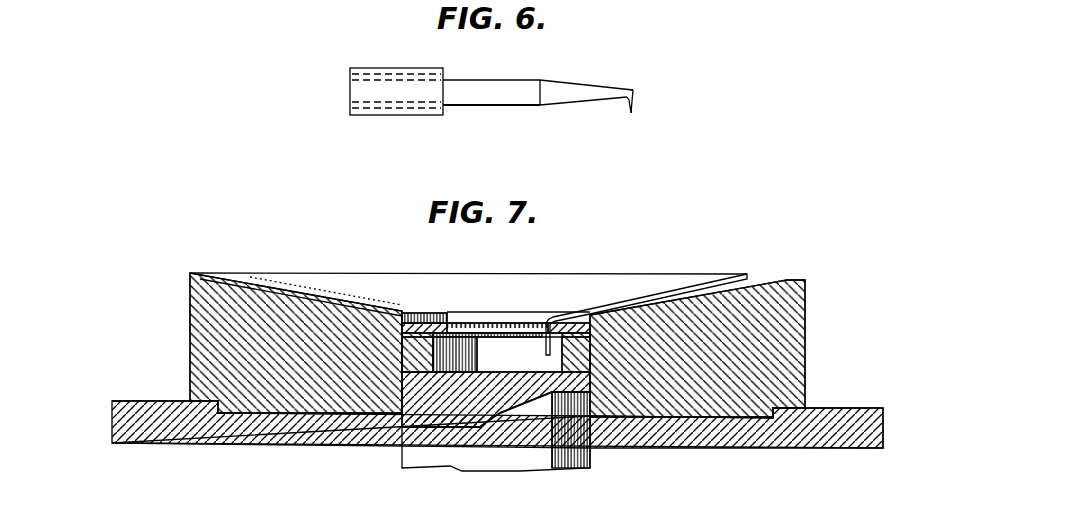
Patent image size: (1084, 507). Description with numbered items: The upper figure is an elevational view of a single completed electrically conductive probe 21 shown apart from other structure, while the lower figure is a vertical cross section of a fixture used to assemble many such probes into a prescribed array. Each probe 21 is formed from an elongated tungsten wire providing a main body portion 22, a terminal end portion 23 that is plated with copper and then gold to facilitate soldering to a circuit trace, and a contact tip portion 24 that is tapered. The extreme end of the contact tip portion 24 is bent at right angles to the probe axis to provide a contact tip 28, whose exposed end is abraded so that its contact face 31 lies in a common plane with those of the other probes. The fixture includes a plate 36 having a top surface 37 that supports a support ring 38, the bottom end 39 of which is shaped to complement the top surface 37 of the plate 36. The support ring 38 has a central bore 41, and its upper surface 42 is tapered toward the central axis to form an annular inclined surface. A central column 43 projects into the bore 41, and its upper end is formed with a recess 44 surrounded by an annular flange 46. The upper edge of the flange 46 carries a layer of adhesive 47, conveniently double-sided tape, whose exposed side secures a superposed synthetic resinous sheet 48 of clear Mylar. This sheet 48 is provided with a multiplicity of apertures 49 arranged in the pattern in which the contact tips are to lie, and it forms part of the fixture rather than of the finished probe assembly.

In FIG. 6, the electrically conductive probe 21 is at (483, 126).
In FIG. 6, the main body portion 22 is at (495, 87).
In FIG. 6, the terminal end portion 23 is at (360, 90).
In FIG. 6, the contact tip portion 24 is at (576, 90).
In FIG. 6, the contact tip 28 is at (634, 103).
In FIG. 6, the contact face 31 is at (631, 113).
In FIG. 7, the plate 36 is at (183, 445).
In FIG. 7, the top surface 37 is at (144, 416).
In FIG. 7, the support ring 38 is at (205, 304).
In FIG. 7, the bottom end 39 is at (345, 415).
In FIG. 7, the central bore 41 is at (403, 400).
In FIG. 7, the upper surface 42 is at (447, 282).
In FIG. 7, the central column 43 is at (517, 466).
In FIG. 7, the recess 44 is at (527, 371).
In FIG. 7, the annular flange 46 is at (515, 367).
In FIG. 7, the layer of adhesive 47 is at (576, 326).
In FIG. 7, the synthetic resinous sheet 48 is at (500, 323).
In FIG. 7, the apertures 49 is at (448, 312).